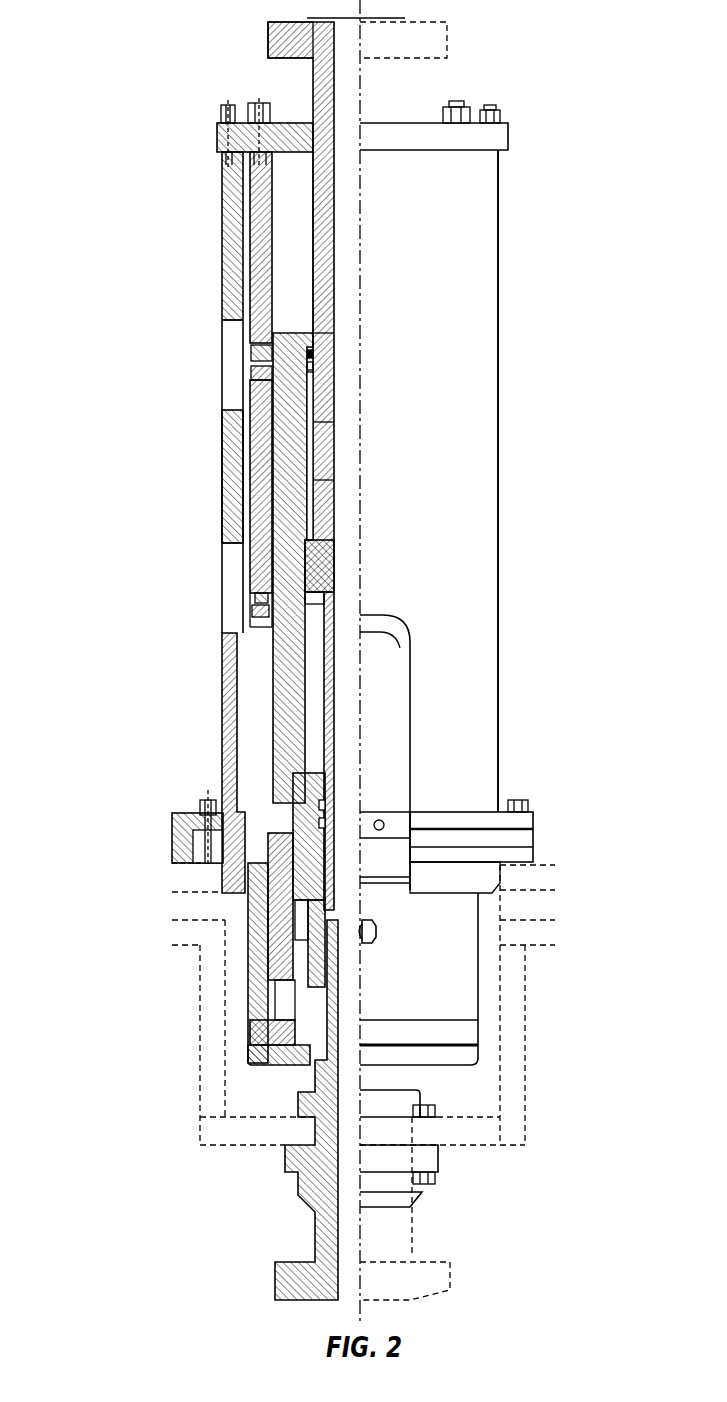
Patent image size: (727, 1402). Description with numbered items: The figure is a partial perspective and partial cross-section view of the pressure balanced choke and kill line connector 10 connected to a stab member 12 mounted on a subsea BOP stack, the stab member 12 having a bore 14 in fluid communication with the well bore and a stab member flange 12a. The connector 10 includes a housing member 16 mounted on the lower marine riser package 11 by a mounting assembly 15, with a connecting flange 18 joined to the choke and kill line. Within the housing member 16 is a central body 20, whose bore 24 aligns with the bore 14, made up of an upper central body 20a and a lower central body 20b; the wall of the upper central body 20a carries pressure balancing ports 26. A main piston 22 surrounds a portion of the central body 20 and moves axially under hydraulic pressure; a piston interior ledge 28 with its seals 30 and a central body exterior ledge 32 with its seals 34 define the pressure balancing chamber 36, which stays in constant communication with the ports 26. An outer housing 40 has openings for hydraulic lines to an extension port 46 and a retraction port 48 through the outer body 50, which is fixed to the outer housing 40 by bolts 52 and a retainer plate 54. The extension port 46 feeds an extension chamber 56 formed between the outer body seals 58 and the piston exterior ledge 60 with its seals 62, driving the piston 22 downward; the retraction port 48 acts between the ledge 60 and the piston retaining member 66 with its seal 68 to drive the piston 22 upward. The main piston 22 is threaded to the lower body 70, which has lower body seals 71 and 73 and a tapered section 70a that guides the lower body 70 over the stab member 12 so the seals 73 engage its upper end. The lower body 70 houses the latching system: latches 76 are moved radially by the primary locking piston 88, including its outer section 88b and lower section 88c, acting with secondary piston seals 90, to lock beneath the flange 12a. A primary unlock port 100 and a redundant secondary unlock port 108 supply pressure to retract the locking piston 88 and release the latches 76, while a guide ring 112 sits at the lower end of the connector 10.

The choke and kill line connector 10 is at (117, 167).
The lower marine riser package 11 is at (545, 908).
The stab member 12 is at (445, 1267).
The stab member flange 12a is at (255, 1110).
The bore 14 is at (432, 1175).
The mounting assembly 15 is at (518, 800).
The housing member 16 is at (475, 260).
The connecting flange 18 is at (273, 47).
The central body 20 is at (313, 108).
The upper central body 20a is at (333, 262).
The lower central body 20b is at (332, 715).
The main piston 22 is at (288, 490).
The bore 24 is at (383, 61).
The pressure balancing ports 26 is at (365, 391).
The piston interior ledge 28 is at (365, 315).
The seals 30 is at (362, 343).
The central body exterior ledge 32 is at (361, 551).
The seals 34 is at (363, 520).
The pressure balancing chamber 36 is at (362, 456).
The outer housing 40 is at (500, 372).
The extension port 46 is at (248, 365).
The retraction port 48 is at (260, 597).
The outer body 50 is at (258, 268).
The bolts 52 is at (487, 107).
The retainer plate 54 is at (508, 133).
The extension chamber 56 is at (250, 393).
The outer body seals 58 is at (263, 350).
The piston exterior ledge 60 is at (287, 537).
The seals 62 is at (277, 570).
The piston retaining member 66 is at (255, 610).
The seal 68 is at (342, 582).
The lower body 70 is at (287, 820).
The tapered section 70a is at (363, 960).
The lower body seals 71 is at (390, 779).
The lower body seals 73 is at (373, 917).
The latches 76 is at (230, 1085).
The primary locking piston 88 is at (222, 935).
The outer section 88b is at (202, 963).
The lower section 88c is at (482, 992).
The secondary piston seals 90 is at (222, 1029).
The primary unlock port 100 is at (424, 802).
The secondary unlock port 108 is at (413, 958).
The guide ring 112 is at (481, 1086).